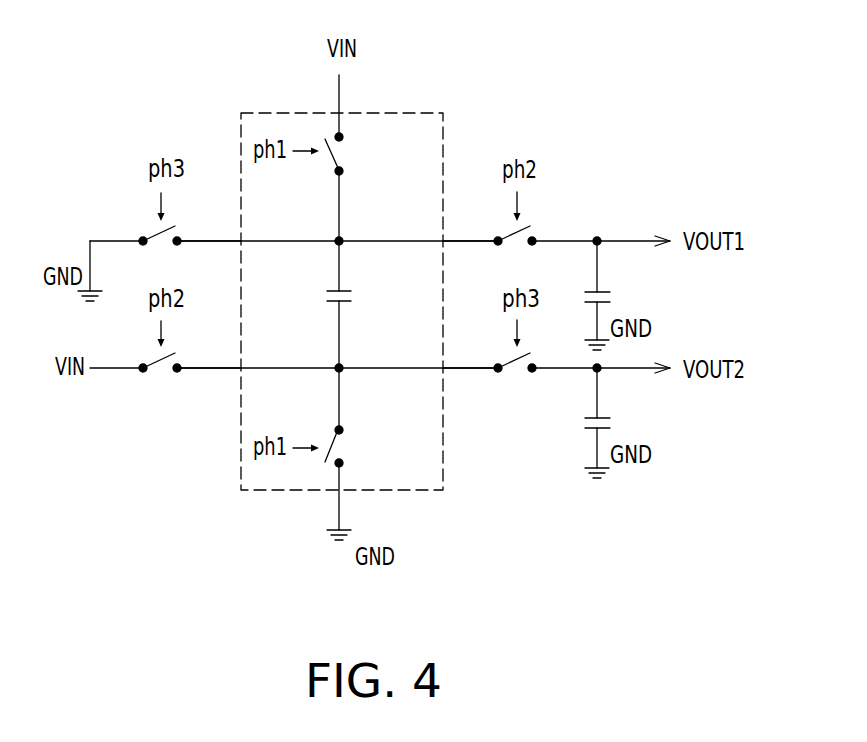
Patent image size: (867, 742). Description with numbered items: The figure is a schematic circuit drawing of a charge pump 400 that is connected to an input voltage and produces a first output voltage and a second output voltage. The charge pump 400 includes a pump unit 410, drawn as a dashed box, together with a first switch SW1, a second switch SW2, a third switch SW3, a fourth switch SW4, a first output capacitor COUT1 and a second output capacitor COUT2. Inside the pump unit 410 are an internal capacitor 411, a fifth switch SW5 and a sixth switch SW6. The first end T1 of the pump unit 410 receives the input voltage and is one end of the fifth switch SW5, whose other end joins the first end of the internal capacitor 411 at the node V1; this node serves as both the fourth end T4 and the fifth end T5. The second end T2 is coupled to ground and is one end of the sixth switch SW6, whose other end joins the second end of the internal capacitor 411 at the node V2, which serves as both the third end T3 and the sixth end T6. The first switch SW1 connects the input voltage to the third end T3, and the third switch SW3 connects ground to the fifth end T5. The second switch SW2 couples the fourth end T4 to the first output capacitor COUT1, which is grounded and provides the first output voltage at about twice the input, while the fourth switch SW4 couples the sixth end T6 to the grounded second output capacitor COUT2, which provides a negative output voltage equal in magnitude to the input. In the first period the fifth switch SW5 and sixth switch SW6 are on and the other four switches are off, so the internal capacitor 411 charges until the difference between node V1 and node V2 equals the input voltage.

The charge pump 400 is at (584, 587).
The pump unit 410 is at (423, 112).
The internal capacitor 411 is at (350, 297).
The first end T1 is at (339, 97).
The second end T2 is at (339, 510).
The third end T3 is at (217, 368).
The fourth end T4 is at (458, 241).
The fifth end T5 is at (213, 241).
The sixth end T6 is at (467, 369).
The first switch SW1 is at (158, 375).
The second switch SW2 is at (532, 229).
The third switch SW3 is at (157, 225).
The fourth switch SW4 is at (515, 375).
The fifth switch SW5 is at (347, 153).
The sixth switch SW6 is at (347, 448).
The node V1 is at (339, 240).
The node V2 is at (340, 371).
The first output capacitor COUT1 is at (620, 298).
The second output capacitor COUT2 is at (620, 425).